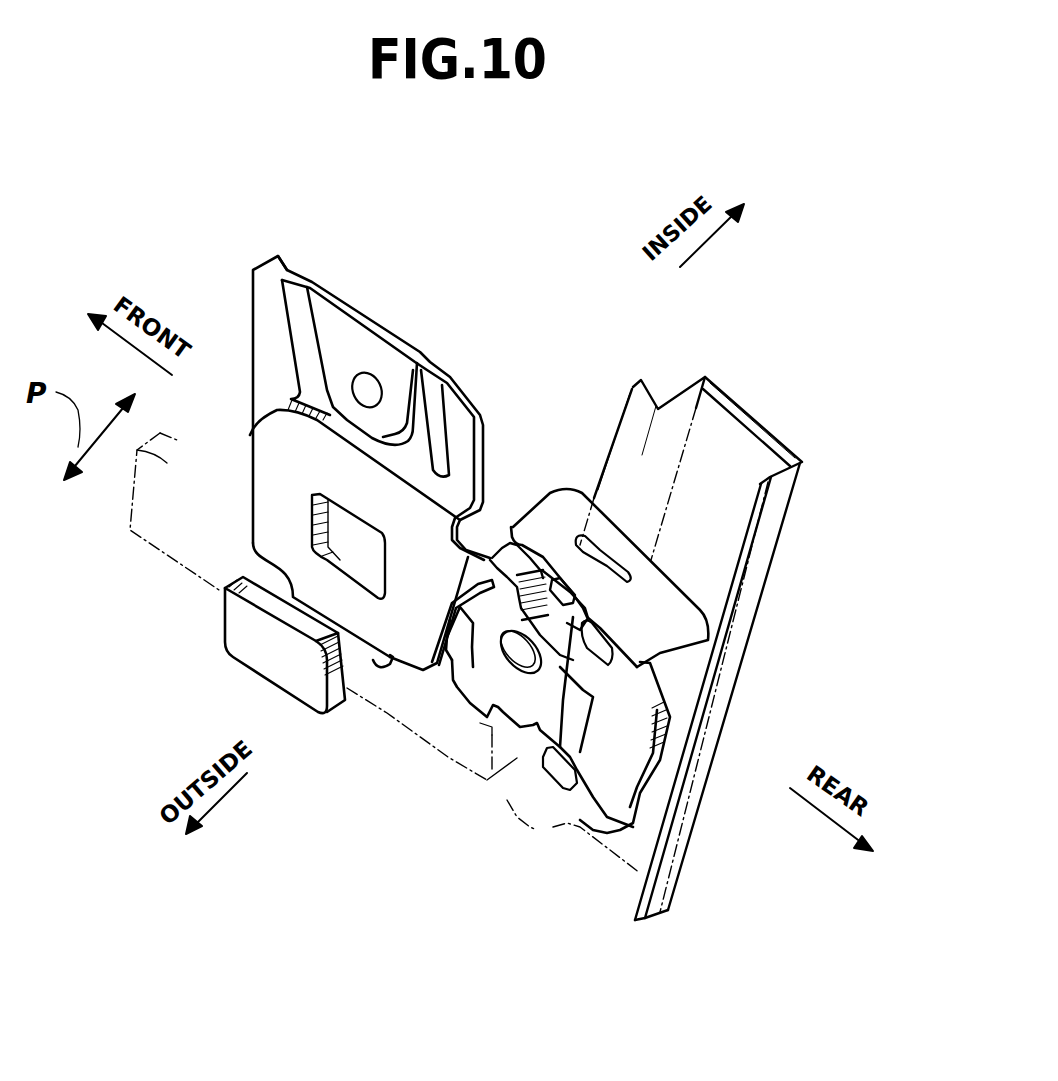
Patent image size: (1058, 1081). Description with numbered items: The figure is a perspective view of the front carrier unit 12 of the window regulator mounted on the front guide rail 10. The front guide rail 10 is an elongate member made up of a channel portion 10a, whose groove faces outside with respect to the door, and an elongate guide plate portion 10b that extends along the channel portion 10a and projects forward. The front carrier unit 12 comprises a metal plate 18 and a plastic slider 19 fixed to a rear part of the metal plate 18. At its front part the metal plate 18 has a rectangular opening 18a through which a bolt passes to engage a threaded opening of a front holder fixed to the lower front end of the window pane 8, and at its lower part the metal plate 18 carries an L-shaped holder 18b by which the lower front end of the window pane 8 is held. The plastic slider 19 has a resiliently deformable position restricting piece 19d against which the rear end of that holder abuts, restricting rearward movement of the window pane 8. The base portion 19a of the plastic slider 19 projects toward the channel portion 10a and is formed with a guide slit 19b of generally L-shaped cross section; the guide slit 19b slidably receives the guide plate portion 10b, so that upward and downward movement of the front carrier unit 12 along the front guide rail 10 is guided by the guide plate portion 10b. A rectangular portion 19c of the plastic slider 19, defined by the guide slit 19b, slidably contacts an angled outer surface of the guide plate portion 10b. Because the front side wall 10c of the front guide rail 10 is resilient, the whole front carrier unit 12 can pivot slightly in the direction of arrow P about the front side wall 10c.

The window pane 8 is at (193, 580).
The front guide rail 10 is at (787, 498).
The channel portion 10a is at (750, 420).
The guide plate portion 10b is at (617, 404).
The front side wall 10c is at (621, 533).
The front carrier unit 12 is at (686, 702).
The metal plate 18 is at (480, 450).
The rectangular opening 18a is at (332, 518).
The L-shaped holder 18b is at (340, 713).
The plastic slider 19 is at (700, 583).
The base portion 19a is at (700, 645).
The guide slit 19b is at (592, 548).
The rectangular portion 19c is at (612, 545).
The position restricting piece 19d is at (470, 677).